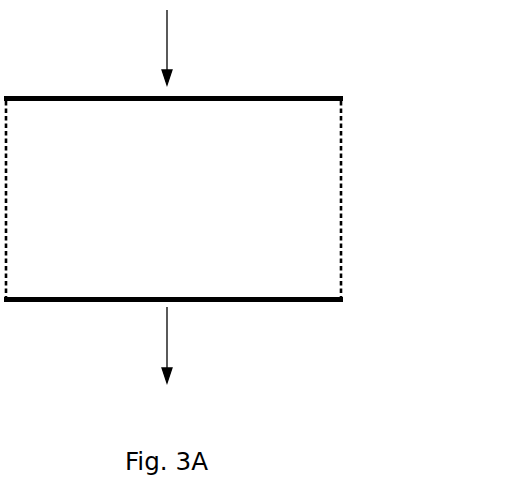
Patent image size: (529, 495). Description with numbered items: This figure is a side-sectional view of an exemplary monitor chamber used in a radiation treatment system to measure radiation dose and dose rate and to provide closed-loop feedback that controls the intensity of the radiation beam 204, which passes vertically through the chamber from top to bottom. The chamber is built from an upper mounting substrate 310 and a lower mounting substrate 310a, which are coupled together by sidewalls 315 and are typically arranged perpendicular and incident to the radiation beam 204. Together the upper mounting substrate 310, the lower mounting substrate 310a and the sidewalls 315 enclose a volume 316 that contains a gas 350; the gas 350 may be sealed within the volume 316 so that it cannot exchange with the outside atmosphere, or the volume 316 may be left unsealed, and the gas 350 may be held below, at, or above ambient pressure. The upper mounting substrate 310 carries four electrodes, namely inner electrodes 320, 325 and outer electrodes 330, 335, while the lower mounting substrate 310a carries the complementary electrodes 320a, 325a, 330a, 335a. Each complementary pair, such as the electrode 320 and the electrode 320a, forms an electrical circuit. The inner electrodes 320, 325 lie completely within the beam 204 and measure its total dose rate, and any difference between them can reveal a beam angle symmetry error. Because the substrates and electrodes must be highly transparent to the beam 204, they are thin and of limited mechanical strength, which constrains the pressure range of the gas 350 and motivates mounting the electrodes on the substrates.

The radiation beam 204 is at (165, 52).
The upper mounting substrate 310 is at (230, 91).
The lower mounting substrate 310a is at (232, 305).
The sidewall 315 is at (348, 198).
The volume 316 is at (303, 256).
The inner electrode 320 is at (43, 104).
The inner electrode 325 is at (173, 111).
The outer electrode 330 is at (173, 111).
The outer electrode 335 is at (173, 111).
The electrode 320a is at (44, 295).
The electrode 325a is at (173, 287).
The electrode 330a is at (173, 287).
The electrode 335a is at (173, 287).
The gas 350 is at (207, 198).